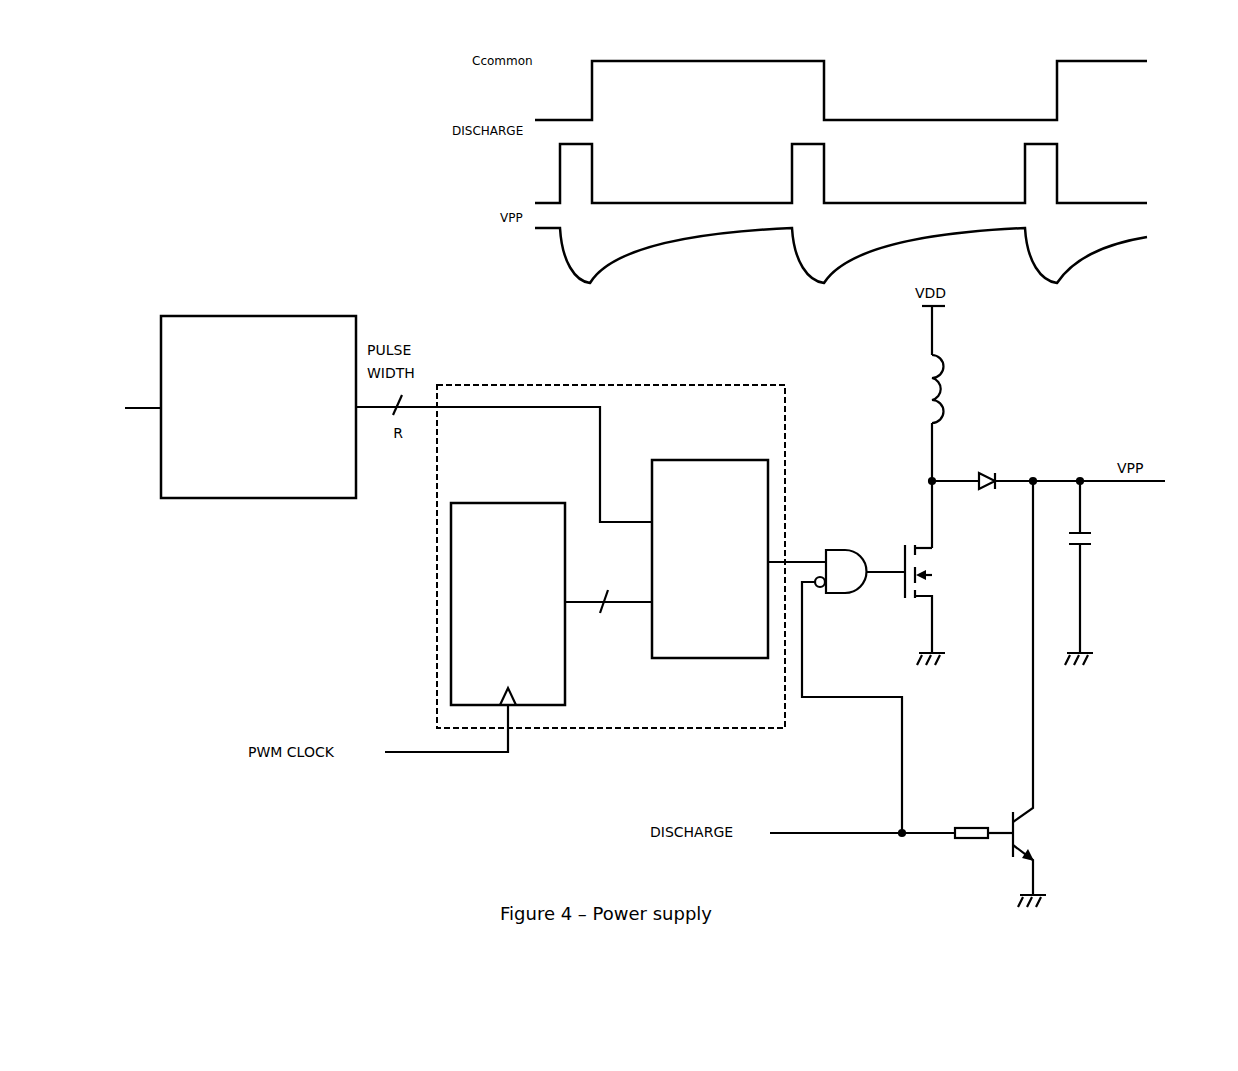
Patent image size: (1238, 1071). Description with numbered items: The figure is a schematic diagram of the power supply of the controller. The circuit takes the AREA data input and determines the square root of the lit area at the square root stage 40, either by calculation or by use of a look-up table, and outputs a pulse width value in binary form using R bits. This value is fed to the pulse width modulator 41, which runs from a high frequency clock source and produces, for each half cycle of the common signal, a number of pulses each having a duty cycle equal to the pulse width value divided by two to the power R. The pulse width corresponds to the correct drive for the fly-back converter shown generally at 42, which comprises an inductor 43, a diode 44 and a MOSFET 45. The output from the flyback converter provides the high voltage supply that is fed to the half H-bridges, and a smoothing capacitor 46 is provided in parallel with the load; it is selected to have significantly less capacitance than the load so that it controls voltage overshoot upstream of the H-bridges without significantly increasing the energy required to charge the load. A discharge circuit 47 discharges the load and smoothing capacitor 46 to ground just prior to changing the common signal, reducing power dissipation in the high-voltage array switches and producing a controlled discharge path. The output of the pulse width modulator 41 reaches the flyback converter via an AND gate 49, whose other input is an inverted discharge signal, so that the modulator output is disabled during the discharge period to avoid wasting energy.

The square root 40 is at (265, 318).
The pulse width modulator 41 is at (725, 383).
The fly-back converter 42 is at (898, 475).
The inductor 43 is at (948, 391).
The diode 44 is at (998, 470).
The MOSFET 45 is at (935, 578).
The smoothing capacitor 46 is at (1093, 547).
The discharge circuit 47 is at (1040, 830).
The AND gate 49 is at (836, 560).